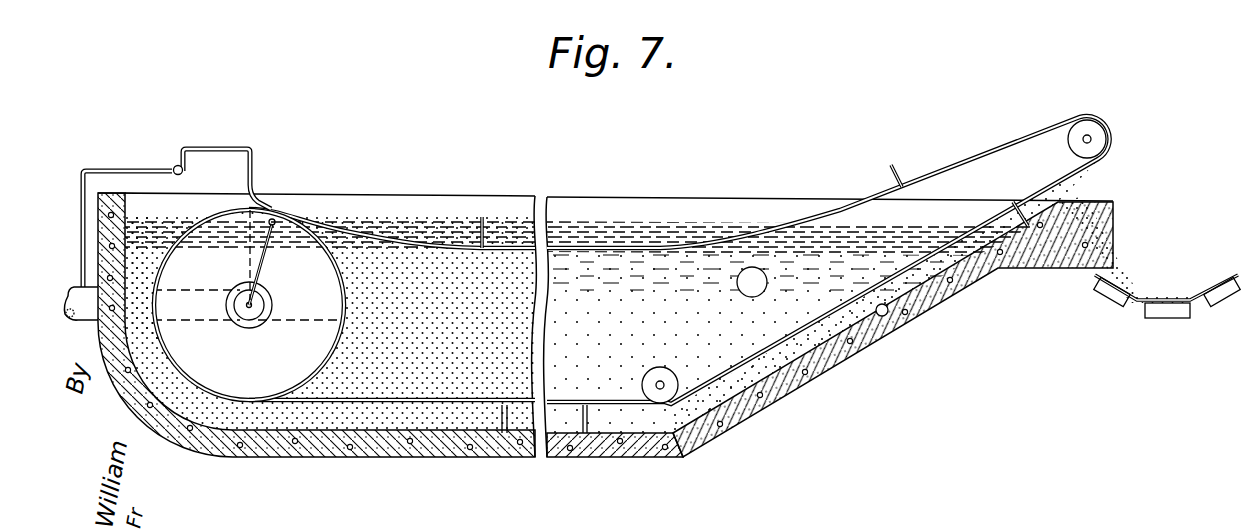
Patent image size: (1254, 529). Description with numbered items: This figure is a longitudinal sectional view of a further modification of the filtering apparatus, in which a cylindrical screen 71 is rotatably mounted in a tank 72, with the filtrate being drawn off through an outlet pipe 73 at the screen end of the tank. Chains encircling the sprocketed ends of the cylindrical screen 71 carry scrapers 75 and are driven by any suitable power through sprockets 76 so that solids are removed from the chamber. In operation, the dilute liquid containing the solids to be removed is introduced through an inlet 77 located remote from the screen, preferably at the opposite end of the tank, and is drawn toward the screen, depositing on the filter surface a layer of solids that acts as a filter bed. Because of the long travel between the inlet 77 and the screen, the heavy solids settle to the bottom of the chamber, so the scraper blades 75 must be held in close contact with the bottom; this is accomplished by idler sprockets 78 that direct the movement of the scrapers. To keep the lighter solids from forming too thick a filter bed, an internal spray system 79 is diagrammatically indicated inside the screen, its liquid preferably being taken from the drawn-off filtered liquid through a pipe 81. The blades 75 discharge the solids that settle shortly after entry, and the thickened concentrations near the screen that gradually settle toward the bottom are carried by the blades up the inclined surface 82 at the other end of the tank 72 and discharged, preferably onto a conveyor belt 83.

The cylindrical screen 71 is at (347, 327).
The tank 72 is at (299, 457).
The outlet pipe 73 is at (86, 318).
The scrapers 75 is at (497, 417).
The sprockets 76 is at (1053, 134).
The inlet 77 is at (768, 280).
The idler sprockets 78 is at (672, 374).
The internal spray system 79 is at (277, 264).
The pipe 81 is at (143, 170).
The inclined surface 82 is at (889, 316).
The conveyor belt 83 is at (1106, 297).